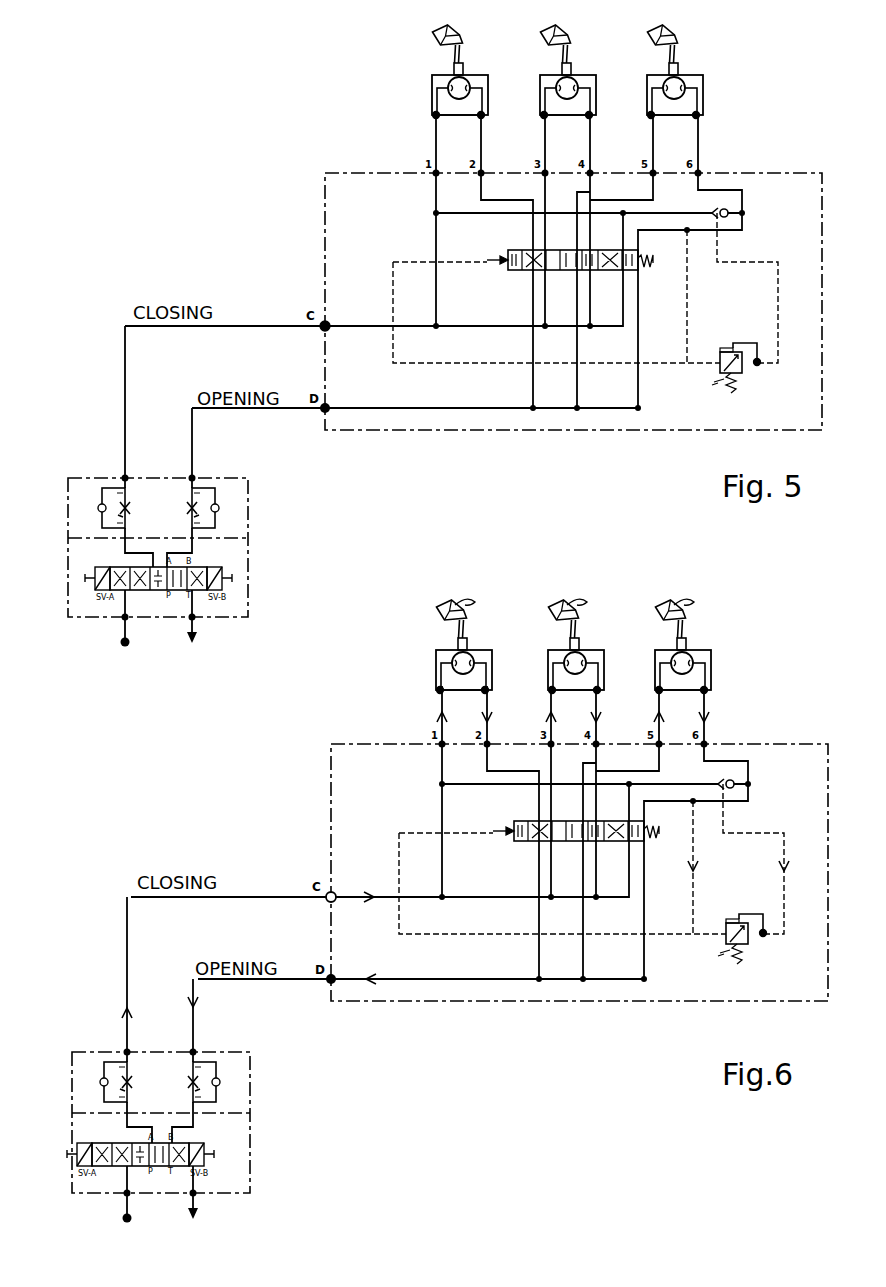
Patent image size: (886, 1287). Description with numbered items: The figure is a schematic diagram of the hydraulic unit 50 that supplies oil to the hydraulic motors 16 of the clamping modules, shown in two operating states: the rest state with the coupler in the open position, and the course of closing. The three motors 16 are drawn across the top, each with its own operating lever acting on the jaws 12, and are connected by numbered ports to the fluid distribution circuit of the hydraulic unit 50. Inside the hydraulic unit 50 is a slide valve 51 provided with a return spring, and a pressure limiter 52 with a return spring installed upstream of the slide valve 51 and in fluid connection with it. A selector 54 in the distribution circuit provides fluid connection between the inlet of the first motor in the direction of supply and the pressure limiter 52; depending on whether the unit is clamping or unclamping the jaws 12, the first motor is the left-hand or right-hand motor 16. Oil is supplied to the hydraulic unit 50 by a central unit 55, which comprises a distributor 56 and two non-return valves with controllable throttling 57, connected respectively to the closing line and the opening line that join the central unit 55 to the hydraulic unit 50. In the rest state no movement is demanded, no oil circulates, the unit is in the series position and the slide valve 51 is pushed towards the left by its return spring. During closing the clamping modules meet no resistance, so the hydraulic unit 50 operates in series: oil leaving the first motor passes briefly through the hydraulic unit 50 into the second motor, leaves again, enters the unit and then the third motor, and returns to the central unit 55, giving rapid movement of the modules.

In FIG. 5, the jaws 12 is at (587, 35).
In FIG. 6, the jaws 12 is at (558, 599).
In FIG. 5, the hydraulic motors 16 is at (535, 85).
In FIG. 6, the hydraulic motors 16 is at (544, 659).
In FIG. 5, the hydraulic unit 50 is at (323, 213).
In FIG. 6, the hydraulic unit 50 is at (328, 786).
In FIG. 5, the slide valve 51 is at (600, 270).
In FIG. 6, the slide valve 51 is at (607, 841).
In FIG. 5, the pressure limiter 52 is at (723, 350).
In FIG. 6, the pressure limiter 52 is at (750, 942).
In FIG. 5, the selector 54 is at (724, 209).
In FIG. 6, the selector 54 is at (730, 780).
In FIG. 5, the central unit 55 is at (185, 557).
In FIG. 6, the central unit 55 is at (252, 1118).
In FIG. 5, the distributor 56 is at (182, 600).
In FIG. 5, the non-return valves with controllable throttling 57 is at (95, 500).